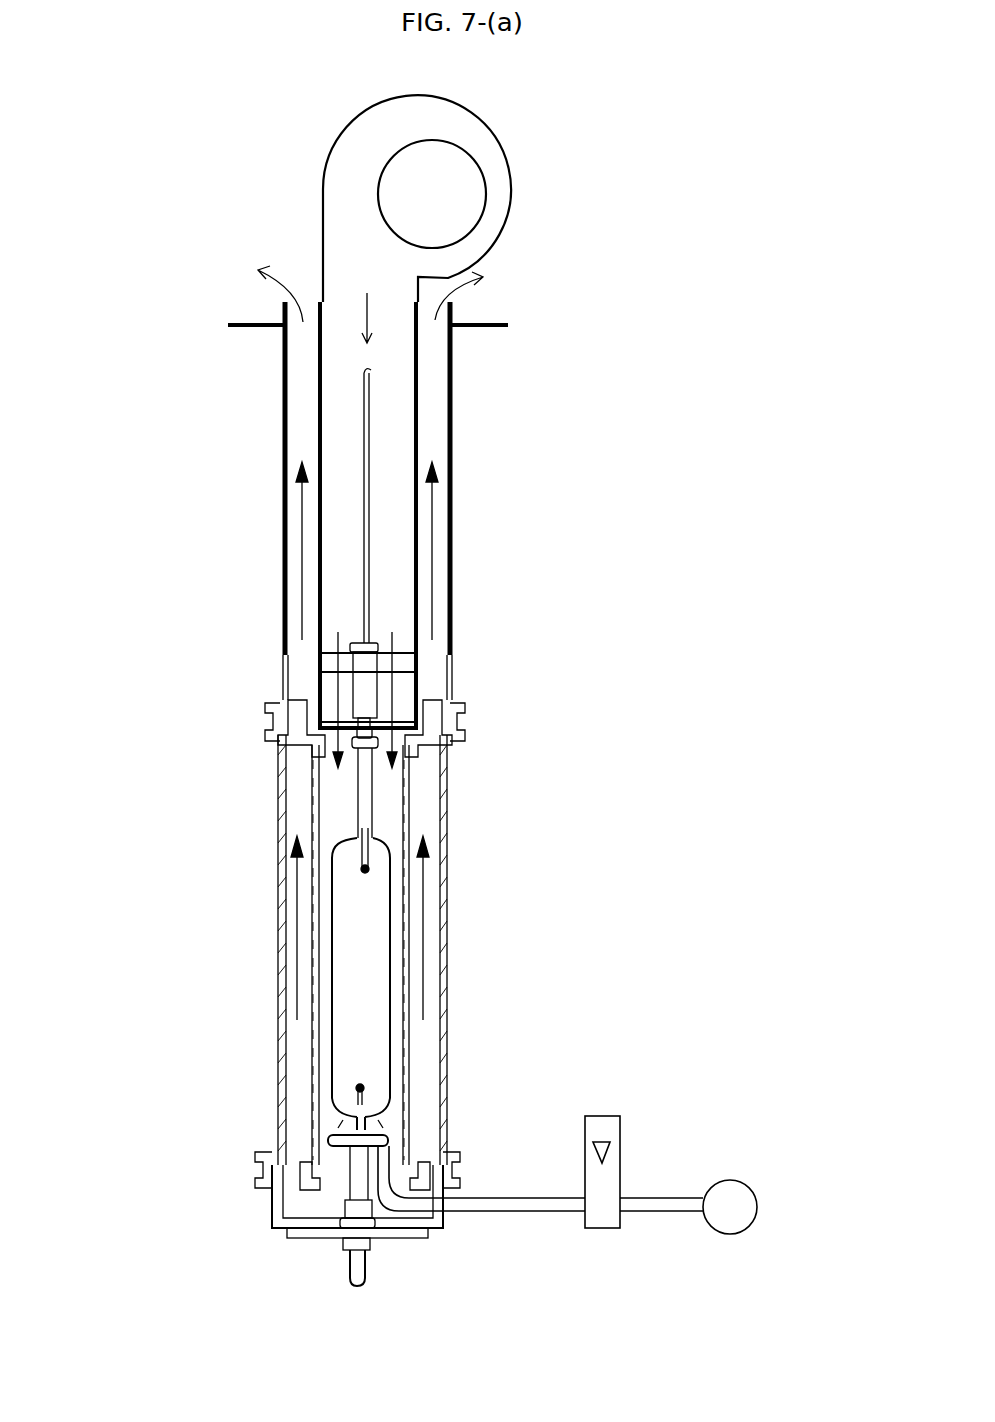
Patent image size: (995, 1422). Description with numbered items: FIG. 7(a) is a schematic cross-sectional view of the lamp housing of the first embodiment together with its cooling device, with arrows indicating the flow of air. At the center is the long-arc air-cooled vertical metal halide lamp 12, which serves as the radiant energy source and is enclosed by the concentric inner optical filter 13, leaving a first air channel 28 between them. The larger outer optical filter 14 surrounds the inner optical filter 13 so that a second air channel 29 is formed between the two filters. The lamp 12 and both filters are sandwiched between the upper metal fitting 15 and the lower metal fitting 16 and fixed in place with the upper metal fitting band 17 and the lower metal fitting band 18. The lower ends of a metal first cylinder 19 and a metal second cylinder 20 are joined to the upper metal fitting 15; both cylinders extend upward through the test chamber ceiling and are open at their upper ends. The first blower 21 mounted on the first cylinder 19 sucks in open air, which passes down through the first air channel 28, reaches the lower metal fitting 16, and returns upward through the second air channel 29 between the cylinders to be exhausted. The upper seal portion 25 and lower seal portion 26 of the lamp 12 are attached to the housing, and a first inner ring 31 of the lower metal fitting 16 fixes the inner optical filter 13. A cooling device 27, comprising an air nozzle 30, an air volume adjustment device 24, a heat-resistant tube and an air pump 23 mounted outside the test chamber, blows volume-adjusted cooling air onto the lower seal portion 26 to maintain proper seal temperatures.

The metal halide lamp 12 is at (348, 960).
The inner optical filter 13 is at (407, 933).
The outer optical filter 14 is at (445, 838).
The upper metal fitting 15 is at (285, 687).
The lower metal fitting 16 is at (273, 1203).
The upper metal fitting band 17 is at (463, 708).
The lower metal fitting band 18 is at (458, 1160).
The first cylinder 19 is at (418, 460).
The second cylinder 20 is at (452, 537).
The first blower 21 is at (496, 165).
The air pump 23 is at (740, 1192).
The air volume adjustment device 24 is at (600, 1132).
The upper seal portion of the lamp 25 is at (362, 792).
The lower seal portion of the lamp 26 is at (355, 1168).
The cooling device 27 is at (562, 1233).
The first air channel 28 is at (325, 862).
The second air channel 29 is at (298, 1037).
The air nozzle 30 is at (333, 1138).
The first inner ring 31 is at (307, 1182).